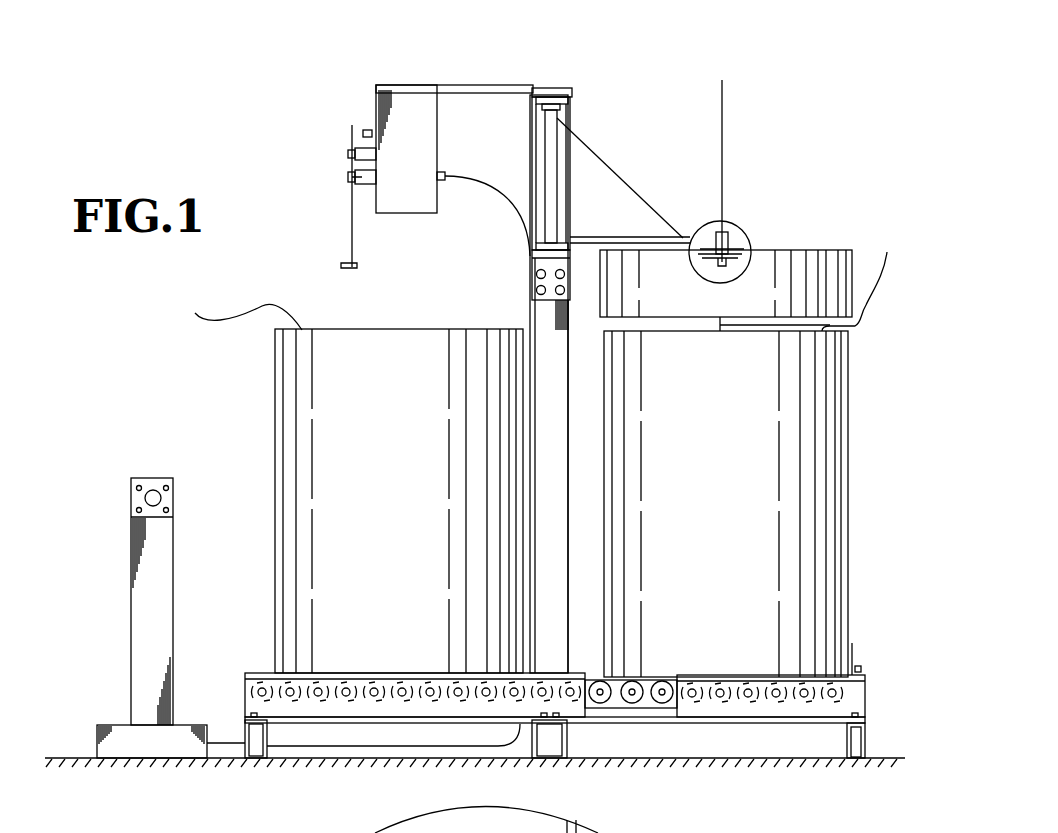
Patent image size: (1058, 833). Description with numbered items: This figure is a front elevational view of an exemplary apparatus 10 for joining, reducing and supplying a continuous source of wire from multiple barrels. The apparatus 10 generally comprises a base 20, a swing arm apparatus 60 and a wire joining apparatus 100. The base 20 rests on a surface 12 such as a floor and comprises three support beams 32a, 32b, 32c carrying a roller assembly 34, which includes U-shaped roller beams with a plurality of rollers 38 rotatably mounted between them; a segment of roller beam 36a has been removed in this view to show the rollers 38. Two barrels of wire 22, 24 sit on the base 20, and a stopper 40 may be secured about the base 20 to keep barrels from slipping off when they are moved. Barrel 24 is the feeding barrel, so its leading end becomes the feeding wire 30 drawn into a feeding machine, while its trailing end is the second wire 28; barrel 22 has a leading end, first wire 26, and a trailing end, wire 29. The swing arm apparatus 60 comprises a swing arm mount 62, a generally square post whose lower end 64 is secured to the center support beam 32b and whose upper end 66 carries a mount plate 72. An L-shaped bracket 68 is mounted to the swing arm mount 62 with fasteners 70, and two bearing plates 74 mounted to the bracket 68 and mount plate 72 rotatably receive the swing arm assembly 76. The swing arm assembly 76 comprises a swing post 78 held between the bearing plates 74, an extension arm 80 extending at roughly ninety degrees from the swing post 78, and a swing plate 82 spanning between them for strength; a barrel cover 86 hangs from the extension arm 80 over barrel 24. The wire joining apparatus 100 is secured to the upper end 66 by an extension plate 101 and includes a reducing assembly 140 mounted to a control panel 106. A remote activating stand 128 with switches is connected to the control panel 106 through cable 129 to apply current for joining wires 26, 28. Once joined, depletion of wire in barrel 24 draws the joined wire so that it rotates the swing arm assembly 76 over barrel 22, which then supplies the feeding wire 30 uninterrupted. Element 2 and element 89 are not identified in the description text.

The wheel 2 is at (744, 232).
The apparatus 10 is at (285, 79).
The surface 12 is at (63, 757).
The base 20 is at (890, 745).
The barrel 22 is at (410, 430).
The barrel 24 is at (738, 430).
The first wire 26 is at (265, 305).
The second wire 28 is at (882, 262).
The wire 29 is at (408, 328).
The feeding wire 30 is at (724, 104).
The support beam 32a is at (258, 758).
The center support beam 32b is at (560, 760).
The support beam 32c is at (840, 748).
The roller assembly 34 is at (905, 678).
The roller beam 36a is at (244, 700).
The rollers 38 is at (660, 705).
The stopper 40 is at (853, 674).
The swing arm apparatus 60 is at (618, 108).
The swing arm mount 62 is at (595, 490).
The lower end 64 is at (572, 614).
The upper end 66 is at (533, 112).
The L-shaped bracket 68 is at (535, 298).
The fasteners 70 is at (535, 274).
The mount plate 72 is at (547, 87).
The bearing plates 74 is at (570, 97).
The swing arm assembly 76 is at (638, 160).
The swing post 78 is at (548, 150).
The extension arm 80 is at (680, 240).
The swing plate 82 is at (620, 224).
The barrel cover 86 is at (695, 297).
The unit 89 is at (486, 820).
The wire joining apparatus 100 is at (355, 83).
The extension plate 101 is at (446, 85).
The control panel 106 is at (400, 215).
The activating stand 128 is at (102, 488).
The cable 129 is at (378, 746).
The reducing assembly 140 is at (327, 149).